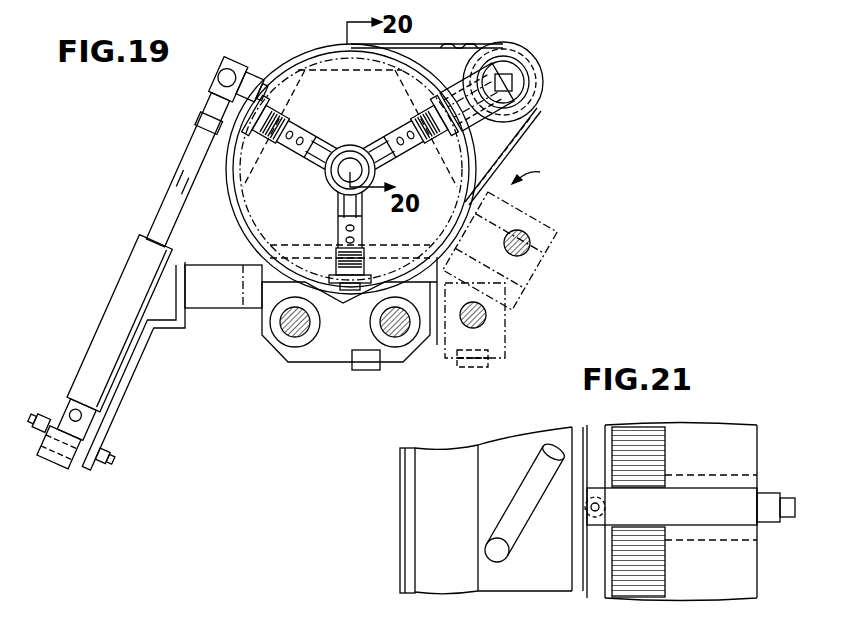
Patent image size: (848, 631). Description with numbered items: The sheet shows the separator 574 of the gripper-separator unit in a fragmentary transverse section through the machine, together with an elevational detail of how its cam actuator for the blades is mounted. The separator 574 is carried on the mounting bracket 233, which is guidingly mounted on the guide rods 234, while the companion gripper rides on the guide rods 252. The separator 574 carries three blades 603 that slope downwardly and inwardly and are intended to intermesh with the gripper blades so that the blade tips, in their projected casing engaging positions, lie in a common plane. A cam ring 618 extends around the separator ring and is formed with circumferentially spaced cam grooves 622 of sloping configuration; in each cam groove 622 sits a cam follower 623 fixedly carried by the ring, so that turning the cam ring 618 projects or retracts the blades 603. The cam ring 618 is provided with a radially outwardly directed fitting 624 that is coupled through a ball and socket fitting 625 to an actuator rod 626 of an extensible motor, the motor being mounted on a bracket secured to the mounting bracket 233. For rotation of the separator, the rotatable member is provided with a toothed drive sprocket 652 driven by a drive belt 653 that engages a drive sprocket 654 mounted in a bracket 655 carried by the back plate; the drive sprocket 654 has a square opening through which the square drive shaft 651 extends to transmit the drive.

In FIG. 19, the blades 603 is at (378, 142).
In FIG. 21, the blades 603 is at (787, 525).
In FIG. 19, the radially outwardly directed fitting 624 is at (252, 72).
In FIG. 19, the ball and socket fitting 625 is at (212, 93).
In FIG. 19, the actuator rod 626 is at (175, 185).
In FIG. 19, the square drive shaft 651 is at (516, 82).
In FIG. 19, the toothed drive sprocket 652 is at (470, 182).
In FIG. 21, the toothed drive sprocket 652 is at (650, 588).
In FIG. 19, the drive belt 653 is at (420, 48).
In FIG. 19, the drive sprocket 654 is at (540, 73).
In FIG. 19, the bracket 655 is at (490, 107).
In FIG. 19, the separator 574 is at (547, 172).
In FIG. 19, the guide rods 252 is at (525, 242).
In FIG. 19, the mounting bracket 233 is at (337, 348).
In FIG. 19, the guide rods 234 is at (283, 338).
In FIG. 21, the cam ring 618 is at (560, 578).
In FIG. 21, the cam grooves 622 is at (515, 442).
In FIG. 21, the cam follower 623 is at (517, 558).